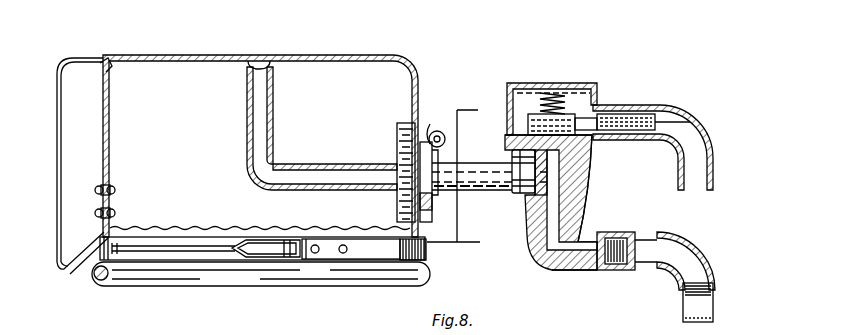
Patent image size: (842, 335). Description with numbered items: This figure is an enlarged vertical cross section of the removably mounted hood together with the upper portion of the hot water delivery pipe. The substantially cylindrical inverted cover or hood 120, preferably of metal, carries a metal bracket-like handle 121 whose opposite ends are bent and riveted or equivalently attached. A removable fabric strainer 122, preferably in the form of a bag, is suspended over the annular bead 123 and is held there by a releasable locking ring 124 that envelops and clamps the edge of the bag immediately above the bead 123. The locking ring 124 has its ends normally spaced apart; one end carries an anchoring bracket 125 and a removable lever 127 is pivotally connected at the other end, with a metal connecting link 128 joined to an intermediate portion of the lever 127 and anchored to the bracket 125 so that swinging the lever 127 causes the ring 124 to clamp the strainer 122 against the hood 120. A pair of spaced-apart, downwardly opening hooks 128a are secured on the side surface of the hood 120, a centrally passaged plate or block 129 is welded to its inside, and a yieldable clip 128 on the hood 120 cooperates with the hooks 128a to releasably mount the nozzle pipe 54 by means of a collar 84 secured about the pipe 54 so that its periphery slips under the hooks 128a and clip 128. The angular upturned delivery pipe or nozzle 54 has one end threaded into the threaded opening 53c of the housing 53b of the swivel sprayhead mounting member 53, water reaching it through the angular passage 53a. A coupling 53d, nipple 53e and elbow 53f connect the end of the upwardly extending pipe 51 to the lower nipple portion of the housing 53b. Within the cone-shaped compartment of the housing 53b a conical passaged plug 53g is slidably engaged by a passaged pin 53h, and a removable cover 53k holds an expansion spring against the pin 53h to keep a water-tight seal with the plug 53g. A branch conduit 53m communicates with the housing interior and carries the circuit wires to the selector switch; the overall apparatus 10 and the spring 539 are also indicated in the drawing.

The inverted cover or hood 120 is at (317, 54).
The bracket-like handle 121 is at (58, 110).
The removable fabric strainer 122 is at (93, 274).
The annular bead 123 is at (137, 275).
The locking ring 124 is at (403, 257).
The anchoring bracket 125 is at (327, 257).
The lever 127 is at (172, 254).
The yieldable clip 128 is at (267, 267).
The hooks 128a is at (429, 128).
The centrally passaged plate or block 129 is at (397, 135).
The delivery pipe or nozzle 54 is at (277, 119).
The collar 84 is at (446, 158).
The apparatus 10 is at (465, 177).
The upwardly extending pipe 51 is at (699, 298).
The swivel sprayhead mounting member 53 is at (532, 264).
The angular passage 53a is at (583, 252).
The housing 53b is at (594, 192).
The threaded opening 53c is at (518, 200).
The coupling 53d is at (622, 269).
The nipple 53e is at (650, 263).
The elbow 53f is at (713, 265).
The conical passaged plug 53g is at (593, 213).
The passaged pin 53h is at (594, 167).
The removable cover 53k is at (572, 83).
The branch conduit 53m is at (715, 142).
The spring 539 is at (545, 102).